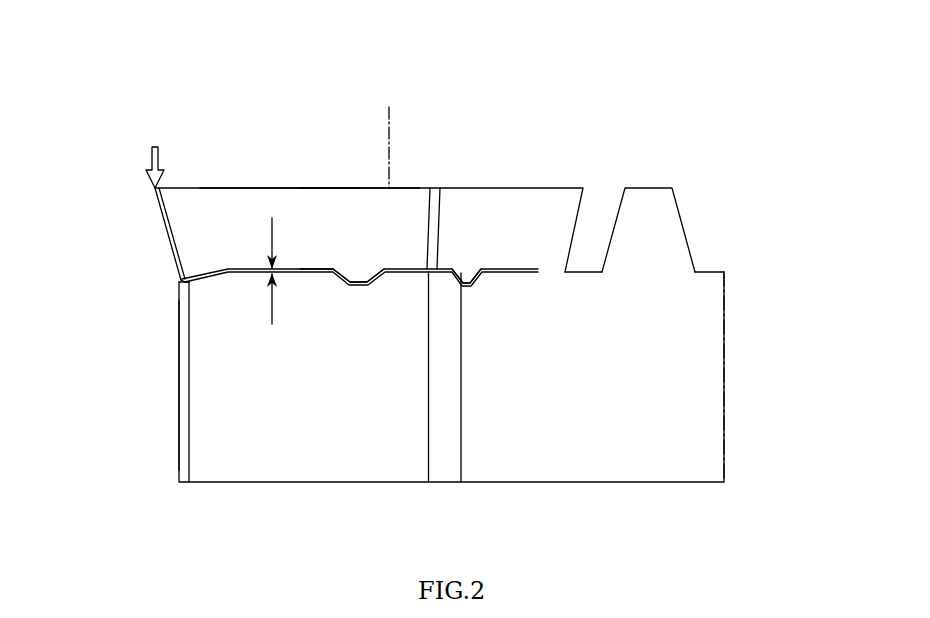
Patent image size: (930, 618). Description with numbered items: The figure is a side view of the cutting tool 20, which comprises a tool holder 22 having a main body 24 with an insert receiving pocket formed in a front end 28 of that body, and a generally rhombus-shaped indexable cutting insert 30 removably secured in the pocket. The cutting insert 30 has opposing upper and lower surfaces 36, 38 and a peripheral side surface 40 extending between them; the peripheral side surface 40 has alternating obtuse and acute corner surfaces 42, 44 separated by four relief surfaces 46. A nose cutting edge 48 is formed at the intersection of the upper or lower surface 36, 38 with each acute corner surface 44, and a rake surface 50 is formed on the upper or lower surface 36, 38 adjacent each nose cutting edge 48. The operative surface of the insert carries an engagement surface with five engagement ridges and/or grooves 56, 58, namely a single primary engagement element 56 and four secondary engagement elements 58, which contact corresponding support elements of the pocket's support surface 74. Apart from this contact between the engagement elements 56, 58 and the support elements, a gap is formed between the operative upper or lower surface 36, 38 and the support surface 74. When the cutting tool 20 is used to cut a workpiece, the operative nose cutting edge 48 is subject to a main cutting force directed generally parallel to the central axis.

The cutting tool 20 is at (487, 122).
The tool holder 22 is at (566, 395).
The main body 24 is at (521, 414).
The front end 28 is at (294, 423).
The cutting insert 30 is at (323, 192).
The upper surface 36 is at (255, 186).
The lower surface 38 is at (251, 285).
The peripheral side surface 40 is at (490, 210).
The obtuse corner surface 42 is at (434, 228).
The acute corner surface 44 is at (203, 240).
The relief surface 46 is at (512, 216).
The nose cutting edge 48 is at (151, 190).
The rake surface 50 is at (159, 187).
The primary engagement element 56 is at (178, 280).
The secondary engagement element 58 is at (358, 281).
The support surface 74 is at (317, 266).